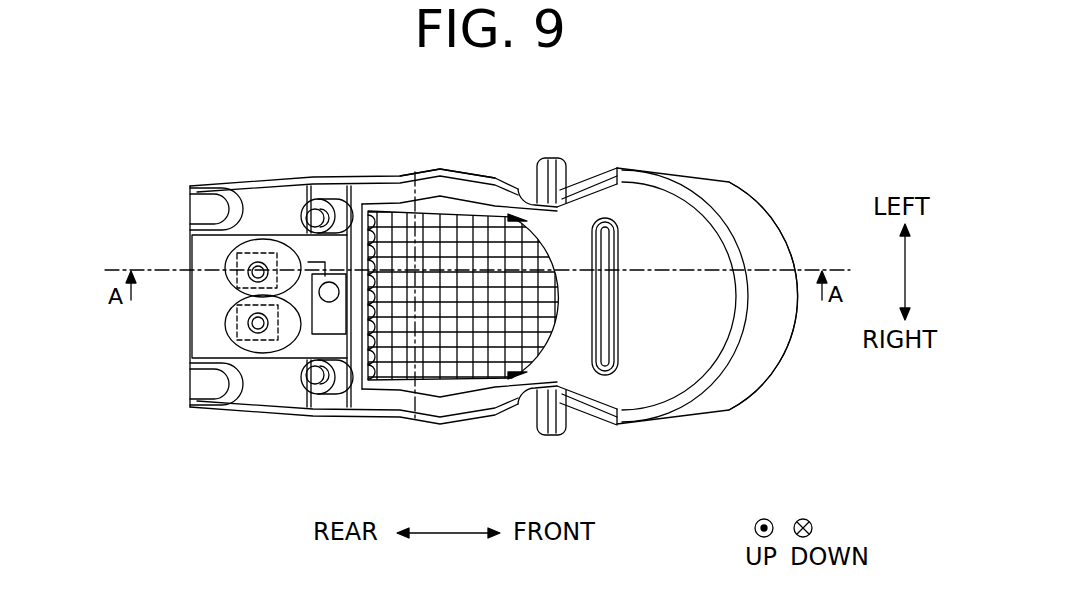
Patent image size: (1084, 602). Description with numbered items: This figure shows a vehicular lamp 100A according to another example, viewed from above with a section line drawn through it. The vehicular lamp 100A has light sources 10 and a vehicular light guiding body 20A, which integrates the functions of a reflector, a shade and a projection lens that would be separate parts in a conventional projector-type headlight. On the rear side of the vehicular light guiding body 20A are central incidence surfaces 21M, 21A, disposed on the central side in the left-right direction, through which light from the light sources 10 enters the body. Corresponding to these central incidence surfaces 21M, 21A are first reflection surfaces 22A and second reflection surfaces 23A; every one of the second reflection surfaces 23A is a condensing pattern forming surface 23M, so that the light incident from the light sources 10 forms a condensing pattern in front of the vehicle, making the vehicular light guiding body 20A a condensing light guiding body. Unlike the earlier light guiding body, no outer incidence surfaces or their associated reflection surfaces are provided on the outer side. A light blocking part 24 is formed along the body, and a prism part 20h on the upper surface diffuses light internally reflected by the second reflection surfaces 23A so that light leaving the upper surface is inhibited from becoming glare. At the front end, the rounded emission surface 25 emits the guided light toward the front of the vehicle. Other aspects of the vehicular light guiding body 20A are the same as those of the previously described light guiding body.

The light sources 10 is at (213, 300).
The vehicular light guiding body 20A is at (370, 441).
The prism part 20h is at (503, 228).
The central incidence surfaces 21M is at (225, 319).
The central incidence surfaces 21A is at (225, 319).
The first reflection surfaces 22A is at (198, 232).
The condensing pattern forming surfaces 23M is at (228, 247).
The second reflection surfaces 23A is at (228, 247).
The light blocking part 24 is at (434, 172).
The emission surface 25 is at (770, 375).
The vehicular lamp 100A is at (779, 136).